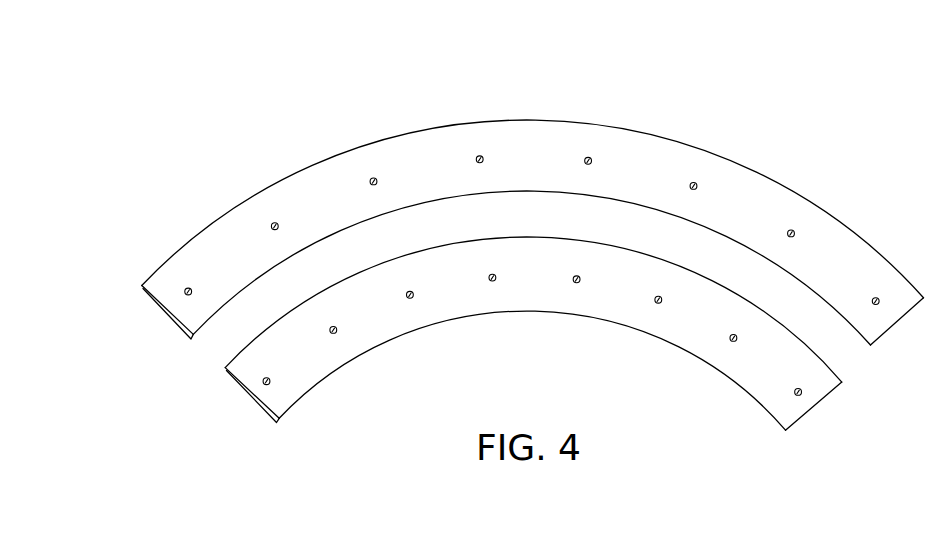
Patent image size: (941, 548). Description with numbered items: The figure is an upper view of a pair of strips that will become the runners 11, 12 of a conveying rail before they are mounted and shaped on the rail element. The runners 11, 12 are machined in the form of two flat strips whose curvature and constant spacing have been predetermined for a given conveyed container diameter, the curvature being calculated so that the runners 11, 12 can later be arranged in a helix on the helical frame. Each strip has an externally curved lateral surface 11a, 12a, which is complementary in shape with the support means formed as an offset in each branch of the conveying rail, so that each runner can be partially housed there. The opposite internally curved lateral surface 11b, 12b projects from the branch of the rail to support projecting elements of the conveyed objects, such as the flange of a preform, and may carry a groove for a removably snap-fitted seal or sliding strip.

The runner 11 is at (533, 214).
The externally curved lateral surface 11a is at (408, 132).
The internally curved lateral surface 11b is at (480, 198).
The runner 12 is at (533, 320).
The externally curved lateral surface 12a is at (495, 320).
The internally curved lateral surface 12b is at (537, 238).